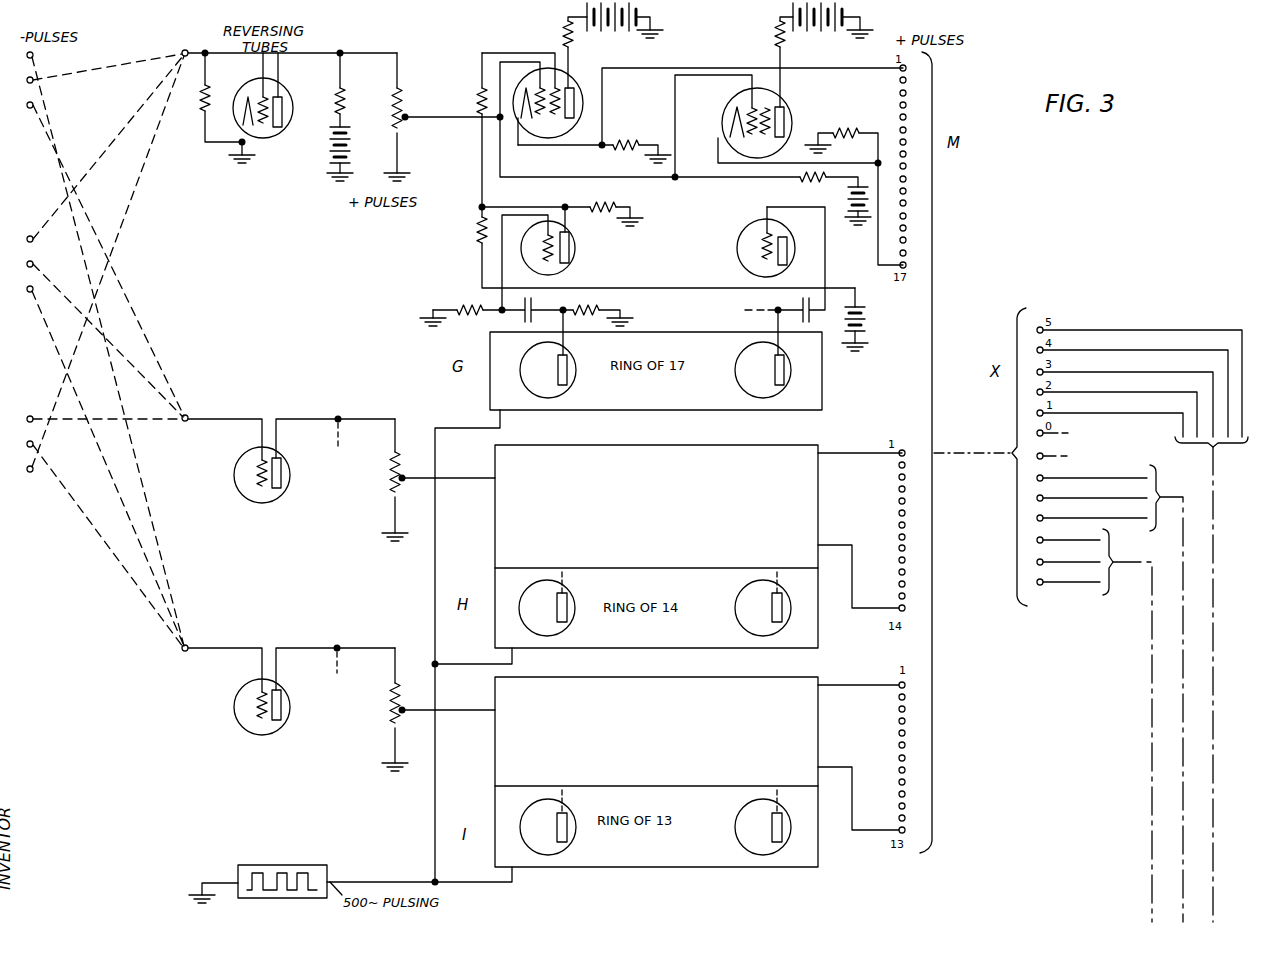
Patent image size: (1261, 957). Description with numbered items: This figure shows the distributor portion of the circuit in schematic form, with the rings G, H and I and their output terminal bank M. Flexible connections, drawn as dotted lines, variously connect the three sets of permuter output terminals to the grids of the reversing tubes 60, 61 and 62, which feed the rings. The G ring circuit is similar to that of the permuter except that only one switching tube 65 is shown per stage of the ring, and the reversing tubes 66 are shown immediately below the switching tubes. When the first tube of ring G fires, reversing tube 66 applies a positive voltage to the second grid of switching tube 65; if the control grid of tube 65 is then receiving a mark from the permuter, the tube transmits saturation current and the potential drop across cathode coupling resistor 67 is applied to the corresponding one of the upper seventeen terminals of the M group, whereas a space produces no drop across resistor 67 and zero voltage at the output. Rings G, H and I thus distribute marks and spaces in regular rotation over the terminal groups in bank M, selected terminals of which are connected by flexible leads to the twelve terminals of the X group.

The reversing tube 60 is at (287, 127).
The reversing tube 61 is at (285, 488).
The reversing tube 62 is at (284, 718).
The switching tube 65 is at (576, 76).
The reversing tube 66 is at (578, 256).
The cathode coupling resistor 67 is at (641, 126).